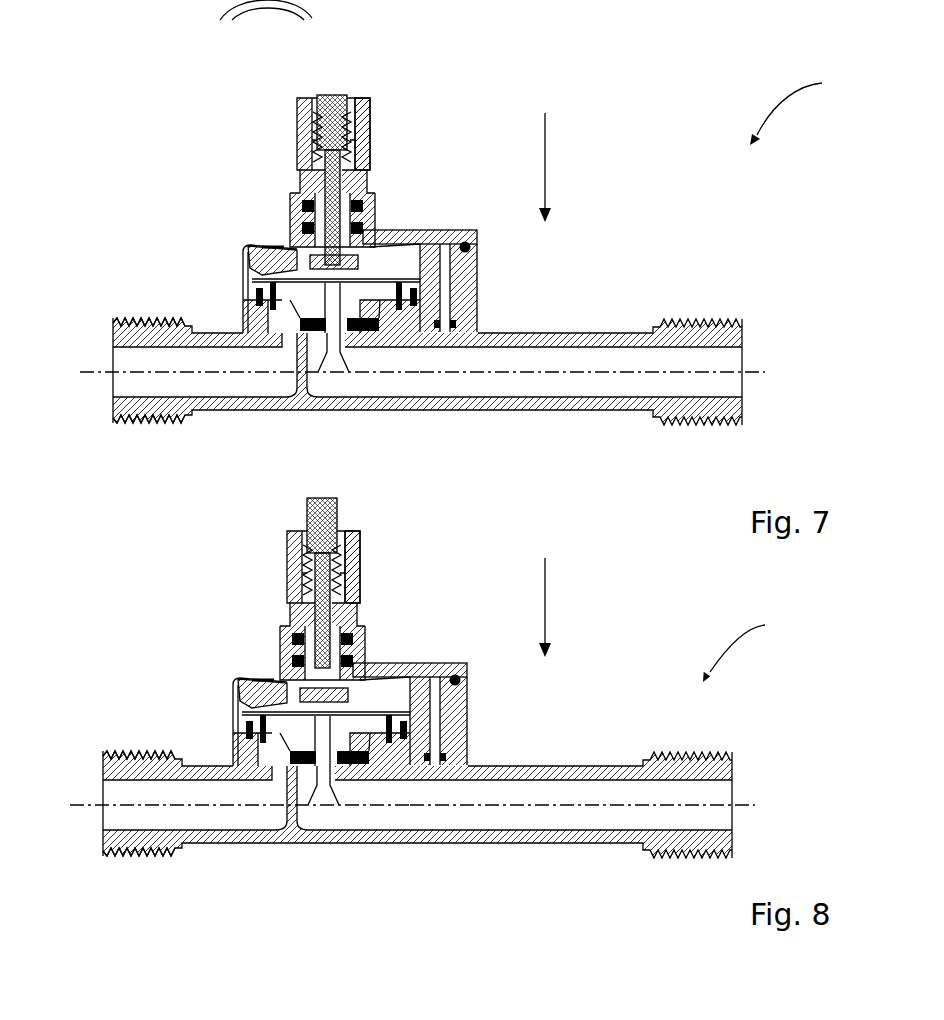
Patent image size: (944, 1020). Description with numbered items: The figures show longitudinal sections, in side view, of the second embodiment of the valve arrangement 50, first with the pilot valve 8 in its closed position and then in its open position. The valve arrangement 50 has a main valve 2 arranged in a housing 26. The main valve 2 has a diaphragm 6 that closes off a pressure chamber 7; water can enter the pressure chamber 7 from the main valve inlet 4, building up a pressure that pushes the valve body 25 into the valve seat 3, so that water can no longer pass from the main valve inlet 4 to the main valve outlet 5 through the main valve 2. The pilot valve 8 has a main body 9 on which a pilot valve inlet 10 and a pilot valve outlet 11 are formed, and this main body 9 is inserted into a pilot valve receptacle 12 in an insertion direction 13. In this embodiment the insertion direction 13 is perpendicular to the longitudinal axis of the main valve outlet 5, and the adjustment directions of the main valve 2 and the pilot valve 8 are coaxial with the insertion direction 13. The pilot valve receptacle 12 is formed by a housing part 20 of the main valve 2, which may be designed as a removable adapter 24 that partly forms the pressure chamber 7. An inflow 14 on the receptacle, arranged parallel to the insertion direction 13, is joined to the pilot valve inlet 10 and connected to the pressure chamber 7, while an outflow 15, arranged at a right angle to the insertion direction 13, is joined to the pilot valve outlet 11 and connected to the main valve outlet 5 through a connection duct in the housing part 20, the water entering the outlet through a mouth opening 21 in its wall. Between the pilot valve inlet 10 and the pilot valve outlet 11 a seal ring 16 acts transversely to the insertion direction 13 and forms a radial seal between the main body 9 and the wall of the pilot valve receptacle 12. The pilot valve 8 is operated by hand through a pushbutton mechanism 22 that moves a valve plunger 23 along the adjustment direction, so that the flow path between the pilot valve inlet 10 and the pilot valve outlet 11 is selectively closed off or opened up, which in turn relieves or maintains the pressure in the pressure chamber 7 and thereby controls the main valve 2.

In FIG. 7, the main valve 2 is at (235, 295).
In FIG. 8, the main valve 2 is at (225, 730).
In FIG. 7, the valve seat 3 is at (365, 278).
In FIG. 8, the valve seat 3 is at (355, 710).
In FIG. 7, the main valve inlet 4 is at (130, 368).
In FIG. 8, the main valve inlet 4 is at (125, 802).
In FIG. 7, the main valve outlet 5 is at (540, 372).
In FIG. 8, the main valve outlet 5 is at (525, 805).
In FIG. 7, the diaphragm 6 is at (378, 332).
In FIG. 8, the diaphragm 6 is at (368, 765).
In FIG. 7, the pressure chamber 7 is at (300, 268).
In FIG. 8, the pressure chamber 7 is at (290, 692).
In FIG. 7, the pilot valve 8 is at (286, 136).
In FIG. 8, the pilot valve 8 is at (277, 568).
In FIG. 7, the main body 9 is at (370, 118).
In FIG. 8, the main body 9 is at (362, 556).
In FIG. 7, the pilot valve inlet 10 is at (372, 258).
In FIG. 8, the pilot valve inlet 10 is at (368, 690).
In FIG. 7, the pilot valve outlet 11 is at (363, 172).
In FIG. 8, the pilot valve outlet 11 is at (360, 605).
In FIG. 7, the pilot valve receptacle 12 is at (298, 210).
In FIG. 8, the pilot valve receptacle 12 is at (290, 648).
In FIG. 7, the insertion direction 13 is at (533, 167).
In FIG. 8, the insertion direction 13 is at (533, 607).
In FIG. 7, the inflow 14 is at (250, 252).
In FIG. 8, the inflow 14 is at (260, 722).
In FIG. 7, the outflow 15 is at (449, 245).
In FIG. 8, the outflow 15 is at (438, 685).
In FIG. 7, the seal ring 16 is at (296, 244).
In FIG. 8, the seal ring 16 is at (285, 675).
In FIG. 7, the housing part 20 is at (298, 215).
In FIG. 8, the housing part 20 is at (288, 650).
In FIG. 7, the mouth opening 21 is at (443, 335).
In FIG. 8, the mouth opening 21 is at (433, 770).
In FIG. 7, the pushbutton mechanism 22 is at (332, 125).
In FIG. 8, the pushbutton mechanism 22 is at (320, 530).
In FIG. 7, the valve plunger 23 is at (318, 148).
In FIG. 8, the valve plunger 23 is at (310, 585).
In FIG. 7, the adapter 24 is at (465, 275).
In FIG. 8, the adapter 24 is at (460, 708).
In FIG. 7, the valve body 25 is at (305, 333).
In FIG. 8, the valve body 25 is at (295, 766).
In FIG. 7, the housing 26 is at (113, 400).
In FIG. 8, the housing 26 is at (228, 762).
In FIG. 7, the valve arrangement 50 is at (800, 105).
In FIG. 8, the valve arrangement 50 is at (748, 645).